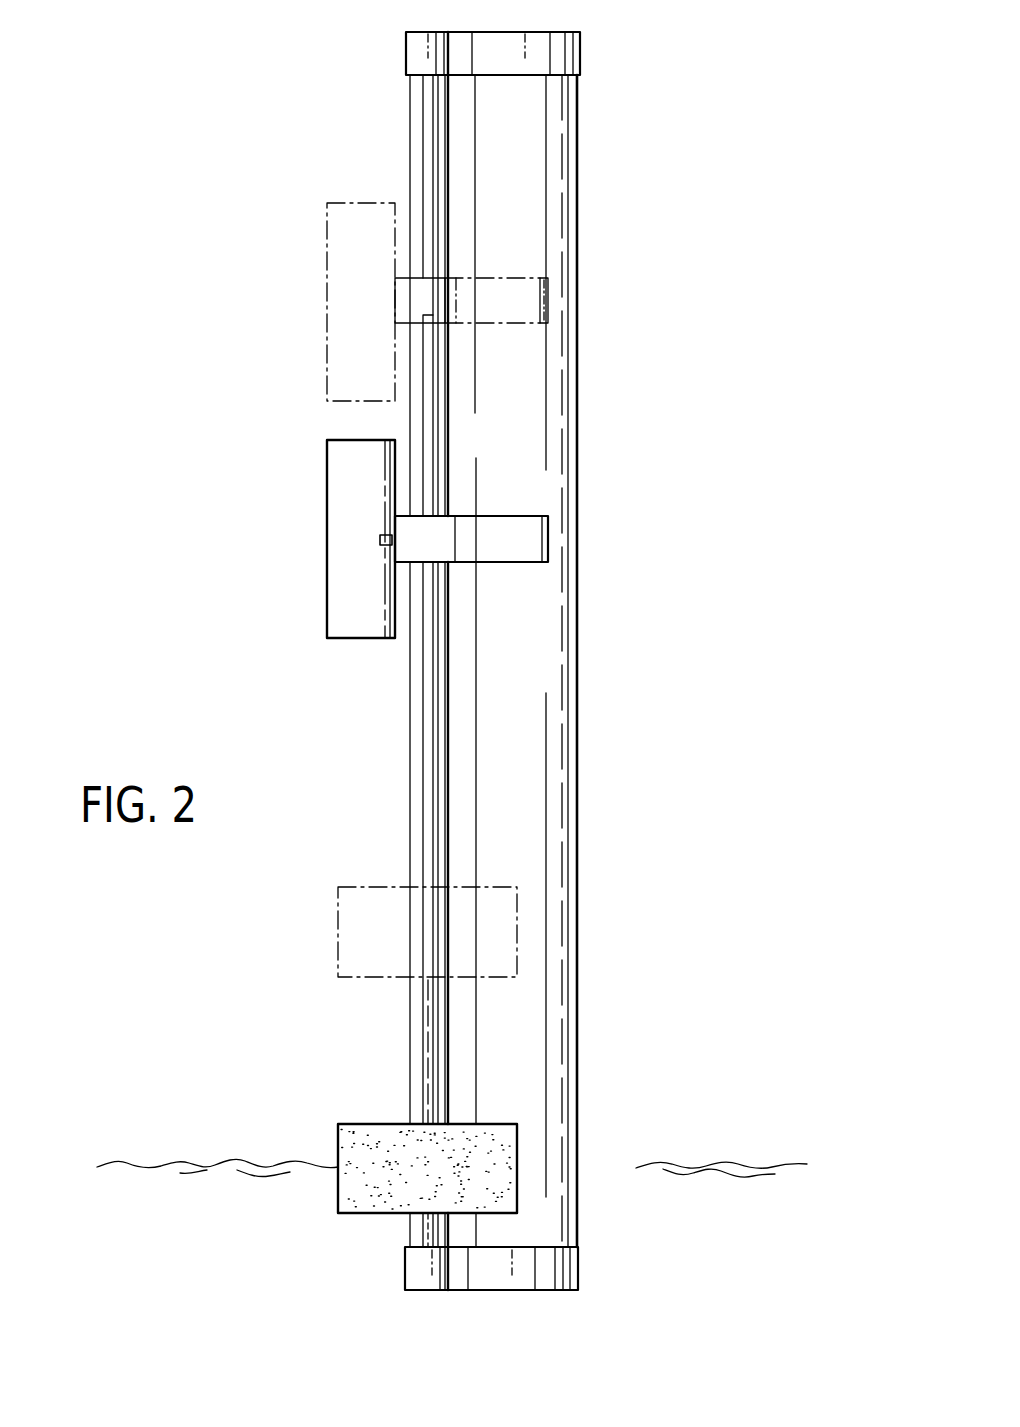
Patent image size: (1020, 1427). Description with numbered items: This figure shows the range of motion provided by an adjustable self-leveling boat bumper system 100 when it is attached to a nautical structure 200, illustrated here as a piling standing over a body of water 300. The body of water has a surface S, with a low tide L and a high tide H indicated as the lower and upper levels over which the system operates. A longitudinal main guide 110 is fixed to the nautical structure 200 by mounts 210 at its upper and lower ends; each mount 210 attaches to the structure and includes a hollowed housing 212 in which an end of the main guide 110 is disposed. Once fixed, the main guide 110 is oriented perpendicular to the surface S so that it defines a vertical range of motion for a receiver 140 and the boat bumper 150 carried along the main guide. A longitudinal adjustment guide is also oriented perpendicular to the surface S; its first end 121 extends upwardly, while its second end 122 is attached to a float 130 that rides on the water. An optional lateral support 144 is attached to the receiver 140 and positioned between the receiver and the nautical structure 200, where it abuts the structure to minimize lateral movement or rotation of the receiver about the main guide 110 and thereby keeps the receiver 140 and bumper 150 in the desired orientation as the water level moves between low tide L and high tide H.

The adjustable self-leveling boat bumper system 100 is at (161, 178).
The longitudinal main guide 110 is at (413, 140).
The first end 121 is at (424, 345).
The second end 122 is at (411, 1068).
The float 130 is at (338, 1130).
The receiver 140 is at (407, 547).
The lateral support 144 is at (530, 539).
The boat bumper 150 is at (327, 480).
The nautical structure 200 is at (579, 232).
The mount 210 is at (583, 48).
The hollowed housing 212 is at (416, 46).
The body of water 300 is at (232, 1249).
The high tide H is at (517, 931).
The low tide L is at (517, 1168).
The surface S is at (215, 1167).